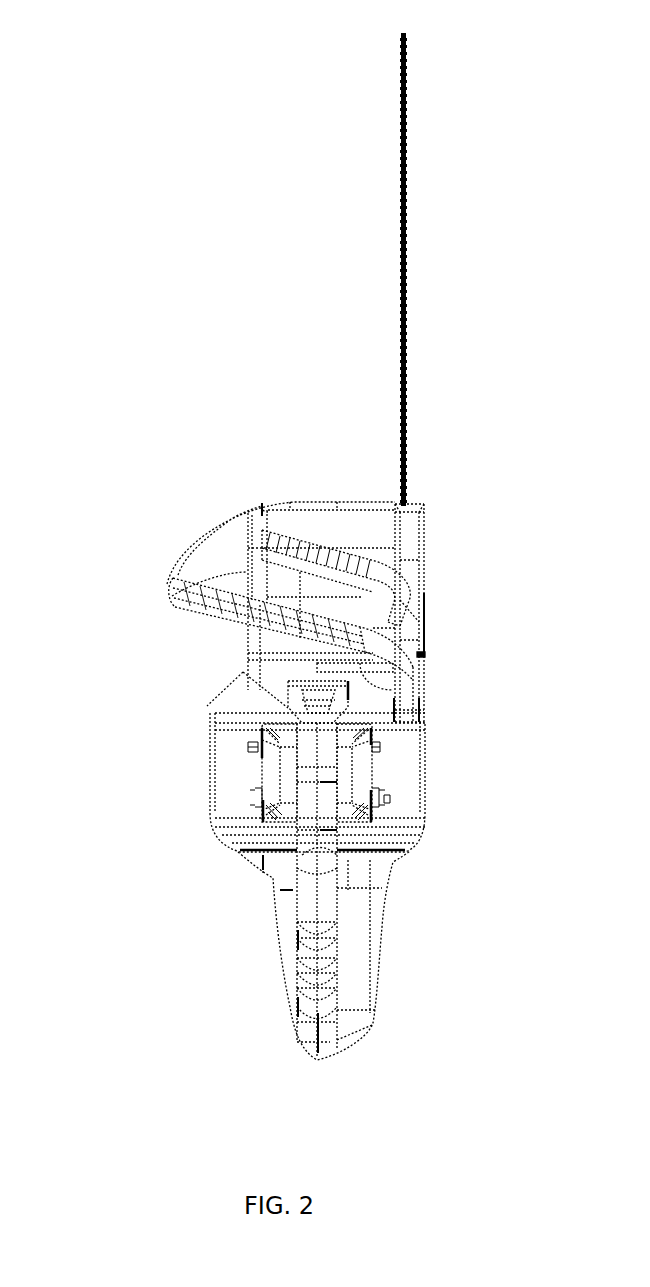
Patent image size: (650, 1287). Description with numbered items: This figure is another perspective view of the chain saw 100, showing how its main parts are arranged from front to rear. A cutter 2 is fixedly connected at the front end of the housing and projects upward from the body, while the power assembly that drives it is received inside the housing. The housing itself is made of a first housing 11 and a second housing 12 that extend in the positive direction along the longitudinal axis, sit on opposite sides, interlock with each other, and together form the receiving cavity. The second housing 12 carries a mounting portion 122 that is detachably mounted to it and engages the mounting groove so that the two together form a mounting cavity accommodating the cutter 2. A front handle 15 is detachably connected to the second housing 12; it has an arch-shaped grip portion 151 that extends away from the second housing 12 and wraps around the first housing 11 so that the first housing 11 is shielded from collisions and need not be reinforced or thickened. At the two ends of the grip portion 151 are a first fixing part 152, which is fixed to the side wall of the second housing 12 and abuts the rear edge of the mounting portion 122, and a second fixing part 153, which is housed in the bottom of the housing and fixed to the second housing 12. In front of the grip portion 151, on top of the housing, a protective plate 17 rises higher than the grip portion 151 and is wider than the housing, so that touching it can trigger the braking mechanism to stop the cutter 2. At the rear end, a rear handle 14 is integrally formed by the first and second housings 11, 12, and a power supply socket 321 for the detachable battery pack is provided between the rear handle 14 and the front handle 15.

The chain saw 100 is at (92, 54).
The cutter 2 is at (403, 310).
The protective plate 17 is at (415, 545).
The mounting portion 122 is at (416, 620).
The front handle 15 is at (291, 595).
The second fixing part 153 is at (218, 557).
The first fixing part 152 is at (413, 674).
The grip portion 151 is at (170, 590).
The first housing 11 is at (230, 763).
The second housing 12 is at (412, 808).
The power supply socket 321 is at (275, 838).
The rear handle 14 is at (313, 910).